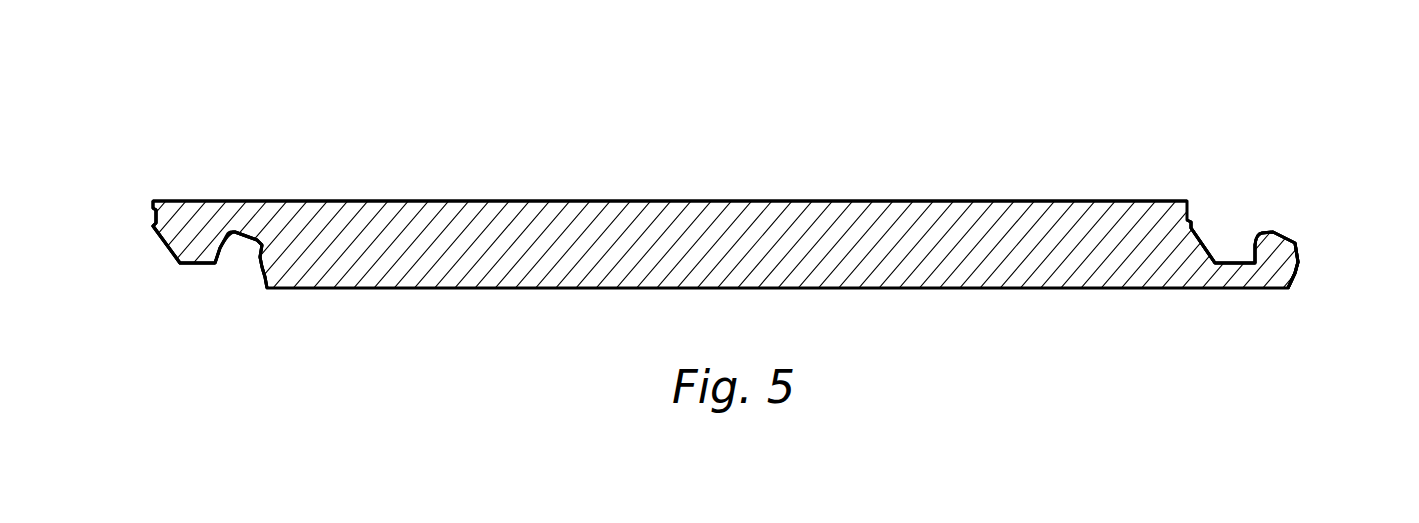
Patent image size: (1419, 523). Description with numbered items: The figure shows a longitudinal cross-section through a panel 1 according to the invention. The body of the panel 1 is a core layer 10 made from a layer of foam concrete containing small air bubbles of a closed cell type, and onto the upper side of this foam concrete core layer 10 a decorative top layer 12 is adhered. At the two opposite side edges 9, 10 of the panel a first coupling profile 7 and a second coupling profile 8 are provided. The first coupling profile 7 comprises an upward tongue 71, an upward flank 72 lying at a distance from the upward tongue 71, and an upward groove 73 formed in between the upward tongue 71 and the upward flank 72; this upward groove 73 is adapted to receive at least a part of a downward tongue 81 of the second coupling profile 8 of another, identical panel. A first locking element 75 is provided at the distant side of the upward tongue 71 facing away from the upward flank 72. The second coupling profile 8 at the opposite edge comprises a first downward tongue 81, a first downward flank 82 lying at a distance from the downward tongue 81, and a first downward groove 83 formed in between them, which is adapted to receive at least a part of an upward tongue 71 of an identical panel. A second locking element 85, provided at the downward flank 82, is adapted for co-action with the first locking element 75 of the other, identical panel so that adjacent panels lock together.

The panel 1 is at (360, 134).
The core layer 10 is at (127, 182).
The decorative top layer 12 is at (725, 198).
The second coupling profile 8 is at (155, 275).
The downward tongue 81 is at (188, 230).
The downward flank 82 is at (267, 288).
The downward groove 83 is at (240, 253).
The second locking element 85 is at (260, 263).
The side edge 9 is at (1322, 213).
The first coupling profile 7 is at (1320, 282).
The upward tongue 71 is at (1280, 273).
The upward flank 72 is at (1197, 250).
The upward groove 73 is at (1228, 228).
The first locking element 75 is at (1298, 255).